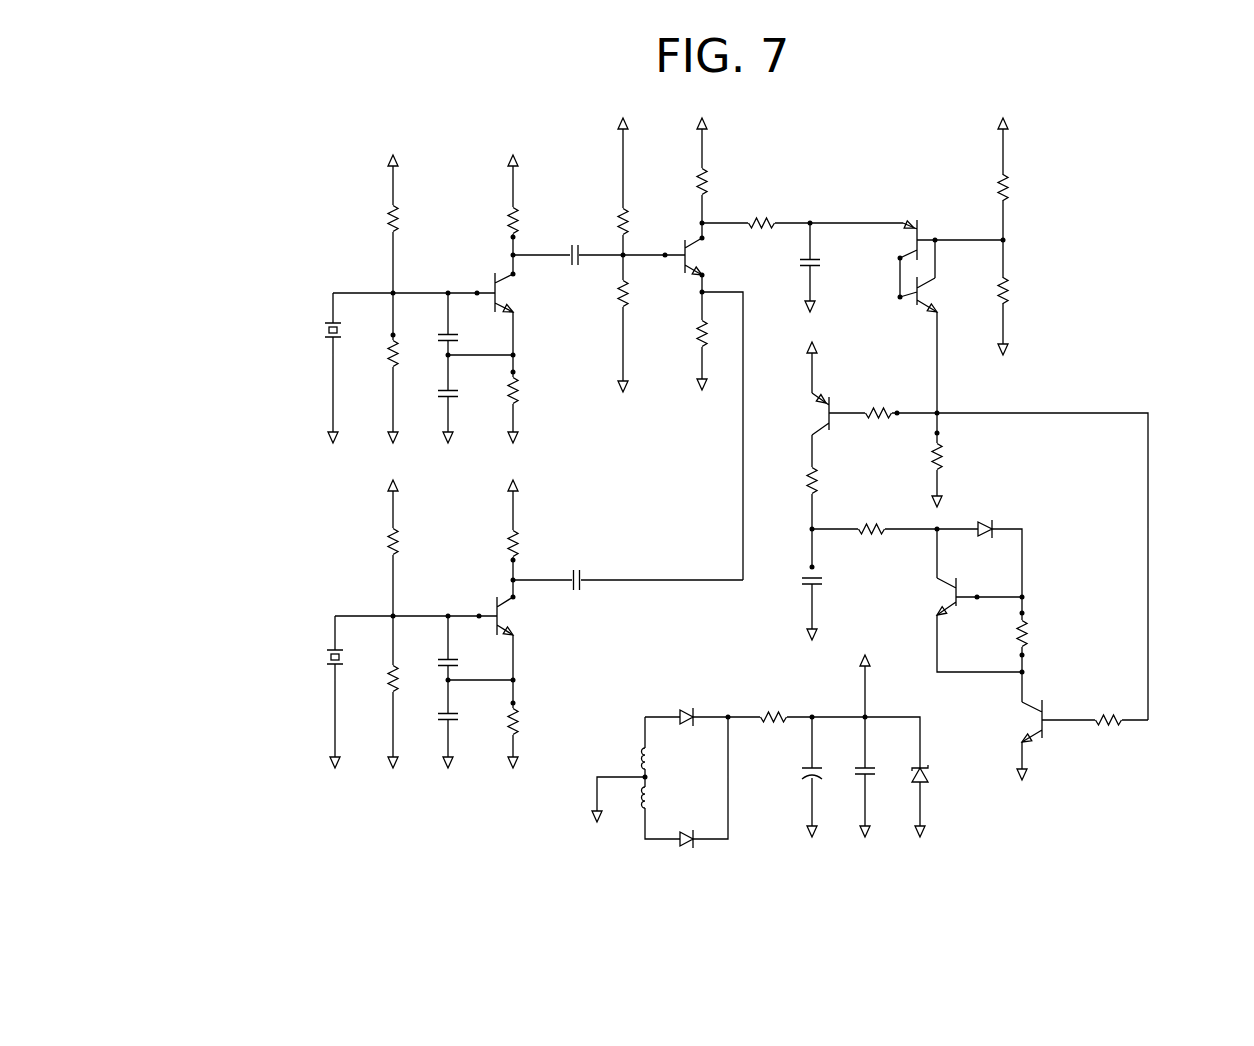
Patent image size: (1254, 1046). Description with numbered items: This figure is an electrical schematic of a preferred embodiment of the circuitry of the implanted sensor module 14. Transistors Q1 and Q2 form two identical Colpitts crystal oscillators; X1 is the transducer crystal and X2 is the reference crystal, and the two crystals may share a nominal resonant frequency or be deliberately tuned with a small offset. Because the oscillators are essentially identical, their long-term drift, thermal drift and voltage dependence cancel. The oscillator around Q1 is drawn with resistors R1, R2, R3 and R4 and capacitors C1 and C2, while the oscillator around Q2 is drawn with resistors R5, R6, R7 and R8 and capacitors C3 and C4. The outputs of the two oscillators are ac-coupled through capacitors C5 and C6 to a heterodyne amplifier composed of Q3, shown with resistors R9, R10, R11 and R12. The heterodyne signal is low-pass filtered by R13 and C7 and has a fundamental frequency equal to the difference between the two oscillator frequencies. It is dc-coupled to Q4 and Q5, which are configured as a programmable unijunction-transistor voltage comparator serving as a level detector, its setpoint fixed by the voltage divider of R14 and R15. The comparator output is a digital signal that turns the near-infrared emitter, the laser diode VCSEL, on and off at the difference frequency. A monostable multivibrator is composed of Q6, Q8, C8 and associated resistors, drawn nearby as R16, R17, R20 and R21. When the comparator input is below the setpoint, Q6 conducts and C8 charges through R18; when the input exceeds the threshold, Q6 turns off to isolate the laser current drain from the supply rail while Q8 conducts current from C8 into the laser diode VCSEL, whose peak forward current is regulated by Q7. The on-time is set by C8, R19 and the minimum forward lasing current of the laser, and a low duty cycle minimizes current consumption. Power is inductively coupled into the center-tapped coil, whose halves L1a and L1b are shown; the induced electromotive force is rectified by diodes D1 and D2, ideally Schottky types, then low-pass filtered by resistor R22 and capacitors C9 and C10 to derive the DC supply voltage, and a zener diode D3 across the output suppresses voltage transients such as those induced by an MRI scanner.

The implanted sensor module 14 is at (297, 190).
The transducer crystal X1 is at (319, 322).
The reference crystal X2 is at (353, 642).
The resistor R1 is at (408, 211).
The resistor R2 is at (408, 346).
The resistor R3 is at (528, 208).
The resistor R4 is at (528, 399).
The resistor R5 is at (408, 533).
The resistor R6 is at (409, 672).
The resistor R7 is at (531, 533).
The resistor R8 is at (529, 721).
The resistor R9 is at (639, 212).
The resistor R10 is at (645, 302).
The resistor R11 is at (726, 172).
The resistor R12 is at (683, 342).
The low-pass filter resistor R13 is at (772, 210).
The voltage divider resistor R14 is at (1028, 182).
The voltage divider resistor R15 is at (1030, 298).
The resistor R16 is at (963, 456).
The resistor R17 is at (883, 399).
The charging resistor R18 is at (837, 478).
The laser on-time resistor R19 is at (871, 517).
The resistor R20 is at (1114, 705).
The resistor R21 is at (1046, 629).
The low-pass filter resistor R22 is at (773, 701).
The capacitor C1 is at (460, 327).
The capacitor C2 is at (460, 382).
The capacitor C3 is at (464, 645).
The capacitor C4 is at (463, 700).
The ac-coupling capacitor C5 is at (572, 246).
The ac-coupling capacitor C6 is at (593, 566).
The low-pass filter capacitor C7 is at (832, 260).
The charge storage capacitor C8 is at (826, 565).
The supply filter capacitor C9 is at (828, 756).
The supply filter capacitor C10 is at (885, 754).
The oscillator transistor Q1 is at (488, 288).
The oscillator transistor Q2 is at (488, 611).
The heterodyne amplifier transistor Q3 is at (676, 252).
The comparator transistor Q4 is at (934, 236).
The comparator transistor Q5 is at (911, 304).
The multivibrator charging transistor Q6 is at (803, 414).
The current regulating transistor Q7 is at (963, 602).
The multivibrator drive transistor Q8 is at (1048, 716).
The rectifier diode D1 is at (673, 706).
The rectifier diode D2 is at (704, 850).
The zener diode D3 is at (936, 758).
The vertical cavity surface emitting laser VCSEL is at (990, 527).
The center-tapped coil winding half L1a is at (671, 762).
The center-tapped coil winding half L1b is at (671, 801).